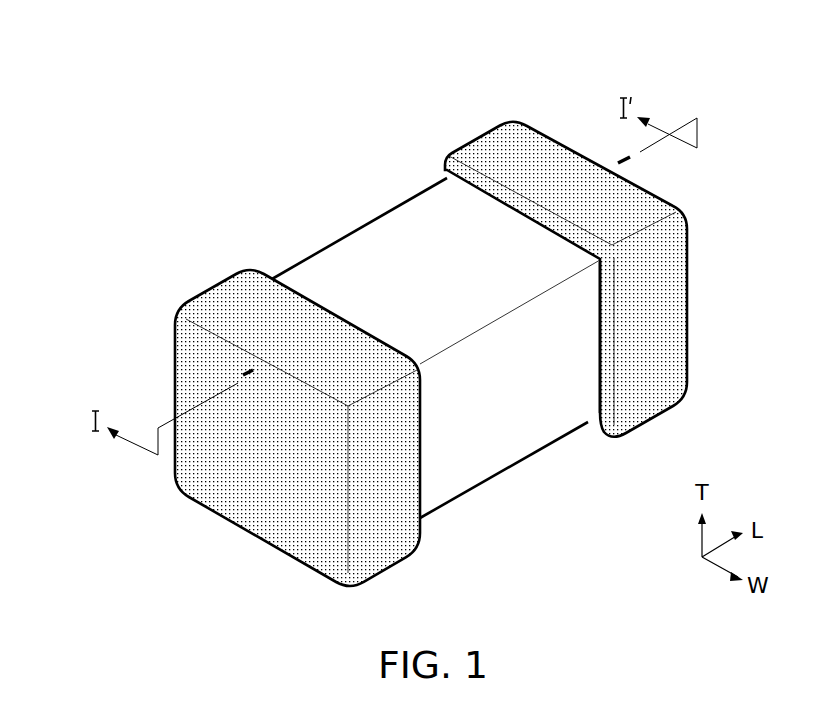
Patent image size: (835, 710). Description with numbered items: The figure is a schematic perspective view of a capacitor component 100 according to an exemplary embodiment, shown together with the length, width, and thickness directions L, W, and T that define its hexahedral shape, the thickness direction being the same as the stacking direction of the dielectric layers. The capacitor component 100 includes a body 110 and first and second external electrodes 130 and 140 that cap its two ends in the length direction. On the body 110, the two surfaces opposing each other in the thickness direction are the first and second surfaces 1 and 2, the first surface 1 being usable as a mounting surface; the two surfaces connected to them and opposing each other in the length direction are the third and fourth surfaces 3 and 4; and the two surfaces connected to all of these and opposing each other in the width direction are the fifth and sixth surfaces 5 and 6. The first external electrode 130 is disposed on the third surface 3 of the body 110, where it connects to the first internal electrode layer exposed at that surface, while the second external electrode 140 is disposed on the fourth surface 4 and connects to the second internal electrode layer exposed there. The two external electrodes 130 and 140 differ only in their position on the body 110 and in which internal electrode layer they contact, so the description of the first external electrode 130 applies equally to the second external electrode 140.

The capacitor component 100 is at (245, 43).
The body 110 is at (388, 227).
The first external electrode 130 is at (232, 300).
The second external electrode 140 is at (493, 150).
The first surface 1 is at (471, 465).
The second surface 2 is at (434, 236).
The third surface 3 is at (245, 510).
The fourth surface 4 is at (662, 321).
The fifth surface 5 is at (522, 437).
The sixth surface 6 is at (384, 282).